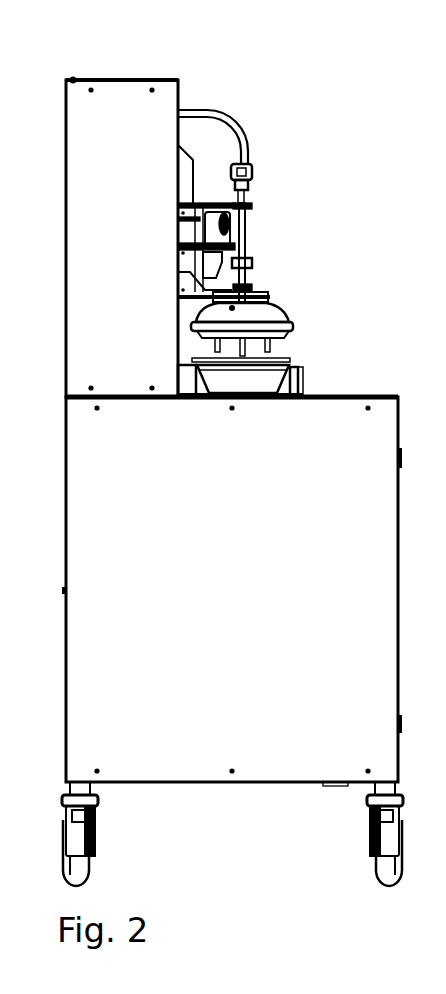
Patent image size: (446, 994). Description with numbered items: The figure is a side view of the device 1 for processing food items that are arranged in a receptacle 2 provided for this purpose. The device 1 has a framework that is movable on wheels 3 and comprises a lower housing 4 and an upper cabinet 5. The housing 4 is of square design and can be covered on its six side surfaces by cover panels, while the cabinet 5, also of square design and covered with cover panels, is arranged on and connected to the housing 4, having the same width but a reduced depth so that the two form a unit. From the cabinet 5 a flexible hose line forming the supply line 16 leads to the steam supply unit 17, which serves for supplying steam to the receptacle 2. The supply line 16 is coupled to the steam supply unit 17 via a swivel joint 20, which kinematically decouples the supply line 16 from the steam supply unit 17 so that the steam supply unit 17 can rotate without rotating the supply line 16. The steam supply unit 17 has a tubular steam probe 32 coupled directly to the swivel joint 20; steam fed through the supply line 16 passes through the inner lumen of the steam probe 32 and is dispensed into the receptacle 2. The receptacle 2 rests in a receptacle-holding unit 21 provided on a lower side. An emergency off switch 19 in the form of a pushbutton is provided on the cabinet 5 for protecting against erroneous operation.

The device 1 is at (305, 86).
The receptacle 2 is at (268, 374).
The wheels 3 is at (80, 868).
The housing 4 is at (250, 786).
The cabinet 5 is at (113, 92).
The supply line 16 is at (246, 122).
The steam supply unit 17 is at (252, 248).
The emergency off switch 19 is at (230, 222).
The swivel joint 20 is at (252, 173).
The receptacle-holding unit 21 is at (304, 378).
The steam probe 32 is at (278, 346).